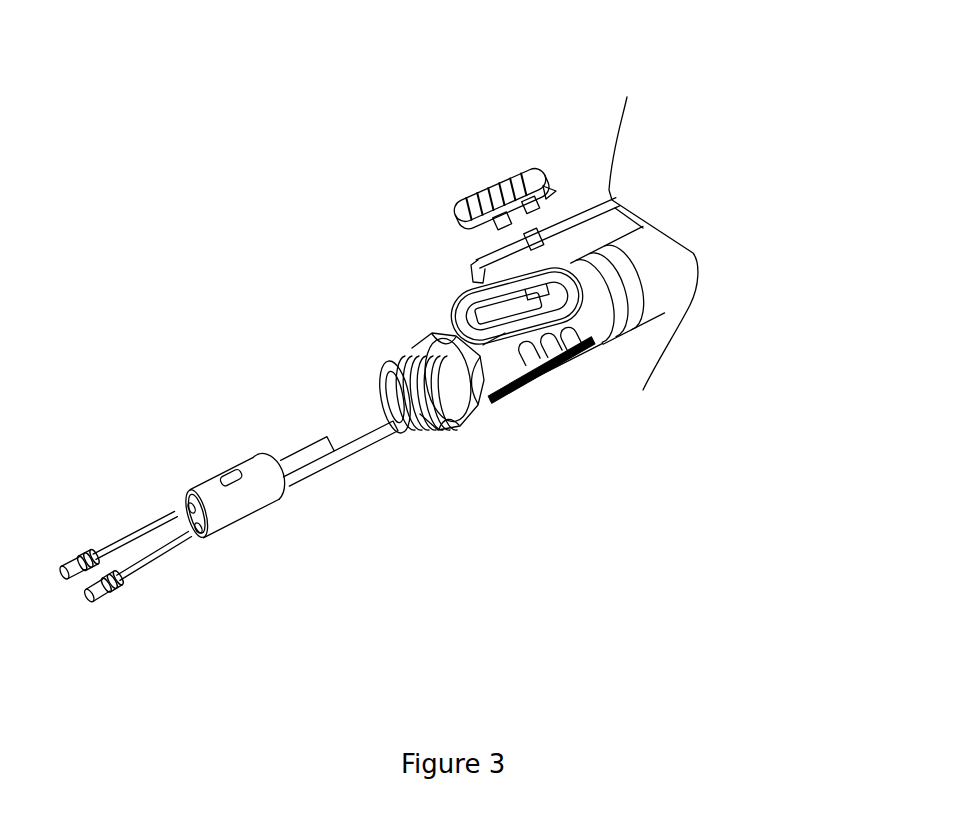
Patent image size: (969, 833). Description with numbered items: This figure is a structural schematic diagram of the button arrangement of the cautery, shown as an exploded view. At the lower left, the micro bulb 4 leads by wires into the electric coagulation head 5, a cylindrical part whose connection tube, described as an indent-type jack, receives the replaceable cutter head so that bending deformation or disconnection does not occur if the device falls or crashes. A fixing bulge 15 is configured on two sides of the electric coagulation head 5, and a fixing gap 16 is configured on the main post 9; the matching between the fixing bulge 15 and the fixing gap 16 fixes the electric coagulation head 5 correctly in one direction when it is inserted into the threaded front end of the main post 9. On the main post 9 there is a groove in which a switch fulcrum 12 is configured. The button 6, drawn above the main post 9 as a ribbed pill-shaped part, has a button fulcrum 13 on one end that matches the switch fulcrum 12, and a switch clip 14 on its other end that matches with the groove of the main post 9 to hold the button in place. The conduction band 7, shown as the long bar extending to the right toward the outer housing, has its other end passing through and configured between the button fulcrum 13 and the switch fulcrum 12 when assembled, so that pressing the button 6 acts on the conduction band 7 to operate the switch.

The micro bulb 4 is at (145, 572).
The electric coagulation head 5 is at (253, 513).
The button 6 is at (467, 191).
The conduction band 7 is at (577, 218).
The main post 9 is at (536, 366).
The switch fulcrum 12 is at (574, 365).
The button fulcrum 13 is at (553, 186).
The switch clip 14 is at (503, 170).
The fixing bulge 15 is at (231, 462).
The fixing gap 16 is at (396, 353).